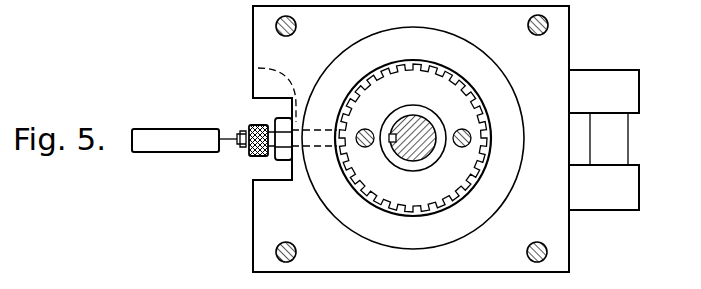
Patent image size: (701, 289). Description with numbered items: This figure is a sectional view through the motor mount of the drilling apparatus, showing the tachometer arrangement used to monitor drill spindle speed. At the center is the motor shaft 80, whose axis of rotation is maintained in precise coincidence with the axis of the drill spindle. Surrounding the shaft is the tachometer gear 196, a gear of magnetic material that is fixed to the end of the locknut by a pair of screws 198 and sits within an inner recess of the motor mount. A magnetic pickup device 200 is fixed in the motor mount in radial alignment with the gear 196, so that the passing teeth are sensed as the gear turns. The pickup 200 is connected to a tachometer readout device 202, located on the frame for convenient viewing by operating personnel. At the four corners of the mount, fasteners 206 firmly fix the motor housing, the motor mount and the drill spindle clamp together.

The motor shaft 80 is at (415, 150).
The tachometer gear 196 is at (387, 183).
The screws 198 is at (365, 149).
The magnetic pickup device 200 is at (253, 69).
The tachometer readout device 202 is at (160, 152).
The fasteners 206 is at (276, 25).